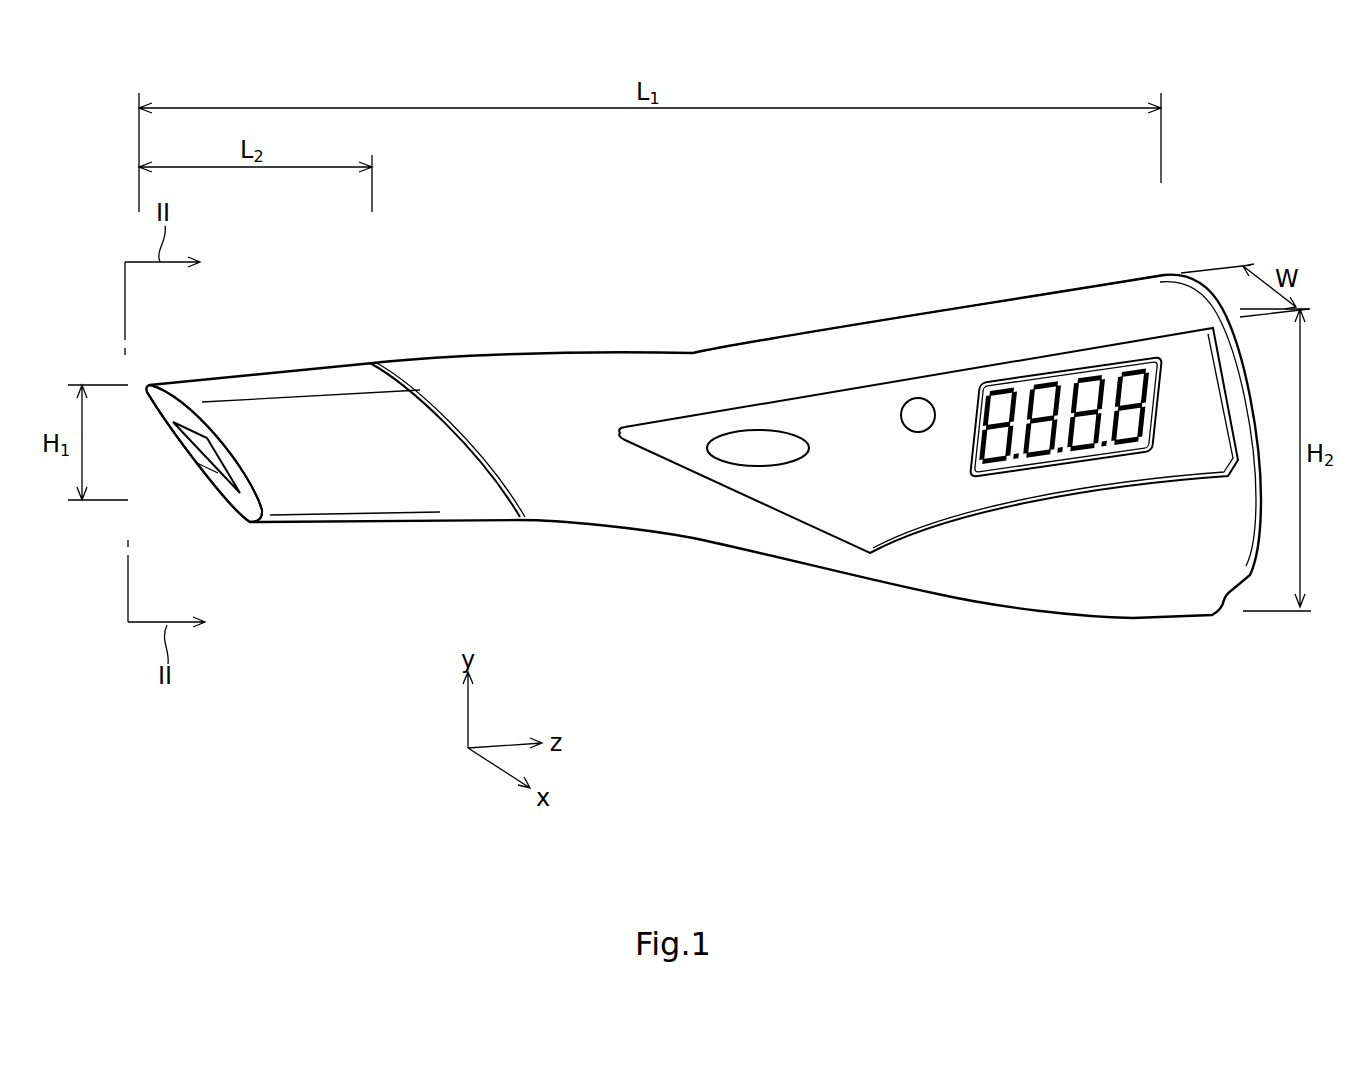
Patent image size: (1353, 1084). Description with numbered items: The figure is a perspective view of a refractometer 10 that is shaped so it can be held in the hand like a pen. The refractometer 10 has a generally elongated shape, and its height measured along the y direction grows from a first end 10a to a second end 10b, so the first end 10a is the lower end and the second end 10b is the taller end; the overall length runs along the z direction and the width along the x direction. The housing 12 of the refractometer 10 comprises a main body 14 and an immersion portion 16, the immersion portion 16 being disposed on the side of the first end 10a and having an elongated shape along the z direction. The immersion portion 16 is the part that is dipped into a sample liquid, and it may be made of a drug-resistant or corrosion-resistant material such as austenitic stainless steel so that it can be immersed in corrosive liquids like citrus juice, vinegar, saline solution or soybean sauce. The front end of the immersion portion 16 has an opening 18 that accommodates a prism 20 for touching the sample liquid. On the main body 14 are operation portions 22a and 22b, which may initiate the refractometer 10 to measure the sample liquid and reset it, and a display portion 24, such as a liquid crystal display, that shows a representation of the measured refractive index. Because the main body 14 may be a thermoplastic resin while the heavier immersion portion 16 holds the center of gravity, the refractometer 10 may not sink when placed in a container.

The refractometer 10 is at (846, 263).
The first end of the refractometer 10a is at (170, 384).
The second end of the refractometer 10b is at (1164, 274).
The housing 12 is at (545, 350).
The main body 14 is at (700, 348).
The immersion portion 16 is at (305, 365).
The opening 18 is at (217, 472).
The prism 20 is at (190, 463).
The operation portion 22a is at (767, 430).
The operation portion 22b is at (935, 397).
The display portion 24 is at (1075, 370).